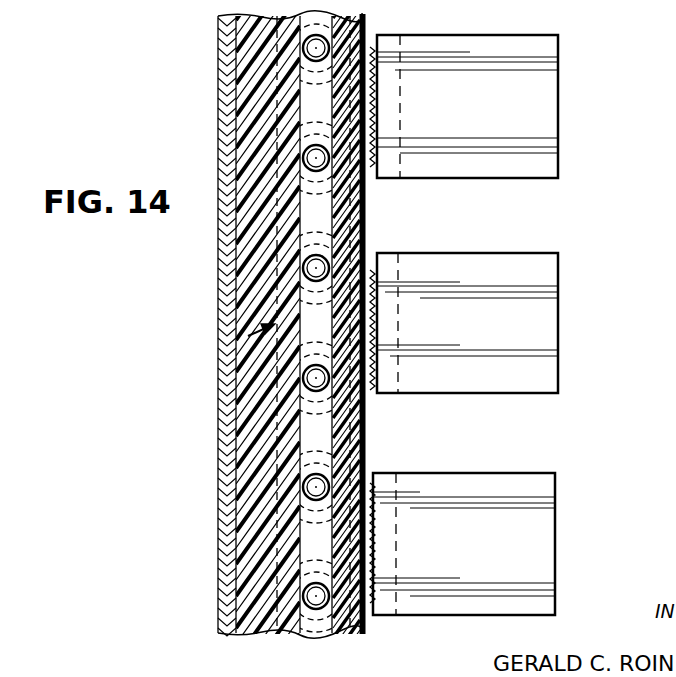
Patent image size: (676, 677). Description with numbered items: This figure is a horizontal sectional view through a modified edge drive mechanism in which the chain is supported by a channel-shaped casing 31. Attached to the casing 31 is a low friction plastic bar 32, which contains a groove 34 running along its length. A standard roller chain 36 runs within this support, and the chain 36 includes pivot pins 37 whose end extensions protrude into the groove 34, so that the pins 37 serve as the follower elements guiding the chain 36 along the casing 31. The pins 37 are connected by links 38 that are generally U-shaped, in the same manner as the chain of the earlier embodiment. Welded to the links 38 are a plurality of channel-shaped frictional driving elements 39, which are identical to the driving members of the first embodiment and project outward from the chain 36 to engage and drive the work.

The channel-shaped casing 31 is at (220, 100).
The low friction plastic bar 32 is at (243, 272).
The groove 34 is at (333, 212).
The roller chain 36 is at (232, 340).
The pivot pin 37 is at (332, 447).
The link 38 is at (369, 272).
The channel-shaped frictional driving element 39 is at (547, 72).